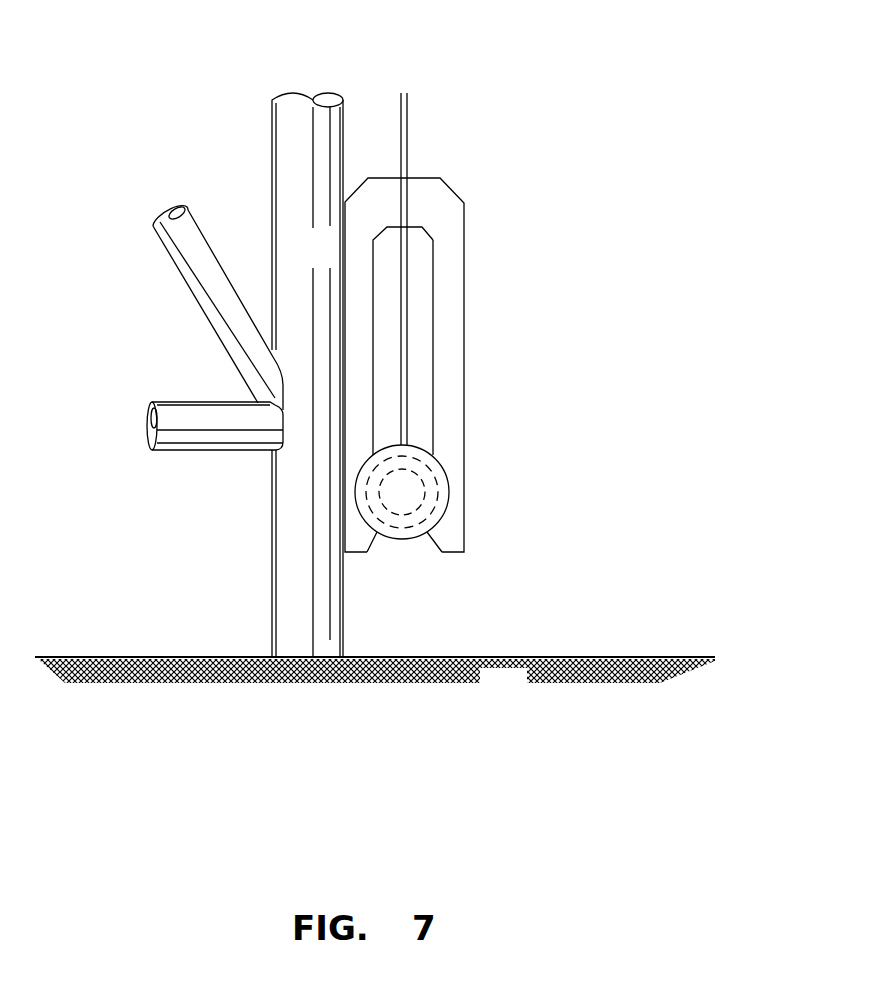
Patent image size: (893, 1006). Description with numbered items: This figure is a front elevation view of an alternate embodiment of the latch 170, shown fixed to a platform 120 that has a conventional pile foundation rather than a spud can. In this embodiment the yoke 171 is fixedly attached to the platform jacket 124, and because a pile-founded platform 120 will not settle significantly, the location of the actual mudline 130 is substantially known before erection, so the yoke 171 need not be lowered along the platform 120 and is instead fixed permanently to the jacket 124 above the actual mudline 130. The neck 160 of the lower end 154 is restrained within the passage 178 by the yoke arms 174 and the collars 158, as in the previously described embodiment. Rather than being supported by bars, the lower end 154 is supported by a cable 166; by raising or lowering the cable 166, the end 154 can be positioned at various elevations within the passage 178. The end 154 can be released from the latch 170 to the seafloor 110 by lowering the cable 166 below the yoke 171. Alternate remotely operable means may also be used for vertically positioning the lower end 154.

The seafloor 110 is at (375, 675).
The platform 120 is at (155, 187).
The platform jacket 124 is at (325, 258).
The actual mudline 130 is at (272, 655).
The lower end 154 is at (402, 492).
The collars 158 is at (437, 500).
The neck 160 is at (418, 508).
The cable 166 is at (407, 128).
The latch 170 is at (568, 153).
The yoke 171 is at (463, 227).
The yoke arms 174 is at (443, 267).
The passage 178 is at (417, 360).